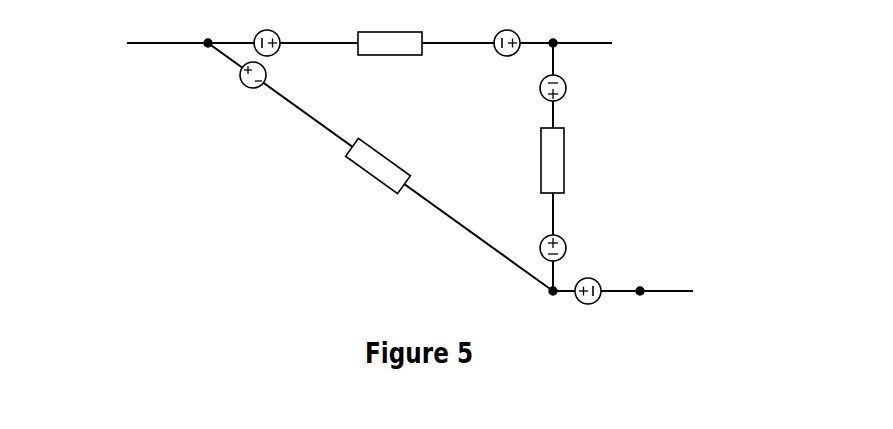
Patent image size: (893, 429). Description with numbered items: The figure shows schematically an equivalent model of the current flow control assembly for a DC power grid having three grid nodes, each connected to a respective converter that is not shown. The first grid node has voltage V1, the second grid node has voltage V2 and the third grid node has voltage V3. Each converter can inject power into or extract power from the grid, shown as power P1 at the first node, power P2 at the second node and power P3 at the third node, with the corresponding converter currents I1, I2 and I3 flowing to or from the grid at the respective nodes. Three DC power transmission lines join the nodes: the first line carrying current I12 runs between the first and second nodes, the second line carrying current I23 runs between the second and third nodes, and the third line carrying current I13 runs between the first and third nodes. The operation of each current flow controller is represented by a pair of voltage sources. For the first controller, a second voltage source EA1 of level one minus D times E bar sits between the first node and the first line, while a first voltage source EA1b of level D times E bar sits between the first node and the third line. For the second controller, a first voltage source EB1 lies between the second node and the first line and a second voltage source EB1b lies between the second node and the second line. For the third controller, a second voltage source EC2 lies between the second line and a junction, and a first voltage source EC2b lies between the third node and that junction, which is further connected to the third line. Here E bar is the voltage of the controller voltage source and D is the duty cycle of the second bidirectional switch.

The voltage at first grid node V1 is at (211, 35).
The voltage at second grid node V2 is at (556, 33).
The voltage at third grid node V3 is at (639, 305).
The power at first grid node P1 is at (130, 53).
The power at second grid node P2 is at (657, 53).
The power at third grid node P3 is at (730, 302).
The current at first grid node I1 is at (176, 34).
The current at second grid node I2 is at (611, 33).
The current at third grid node I3 is at (687, 283).
The current flow in first DC power transmission line I12 is at (408, 28).
The current flow in third DC power transmission line I13 is at (376, 190).
The current flow in second DC power transmission line I23 is at (572, 143).
The second voltage source of first current flow controller EA1 is at (300, 8).
The first voltage source of first current flow controller EA1b is at (254, 101).
The first voltage source of second current flow controller EB1 is at (502, 32).
The second voltage source of second current flow controller EB1b is at (642, 81).
The second voltage source of third current flow controller EC2 is at (644, 242).
The first voltage source of third current flow controller EC2b is at (611, 312).